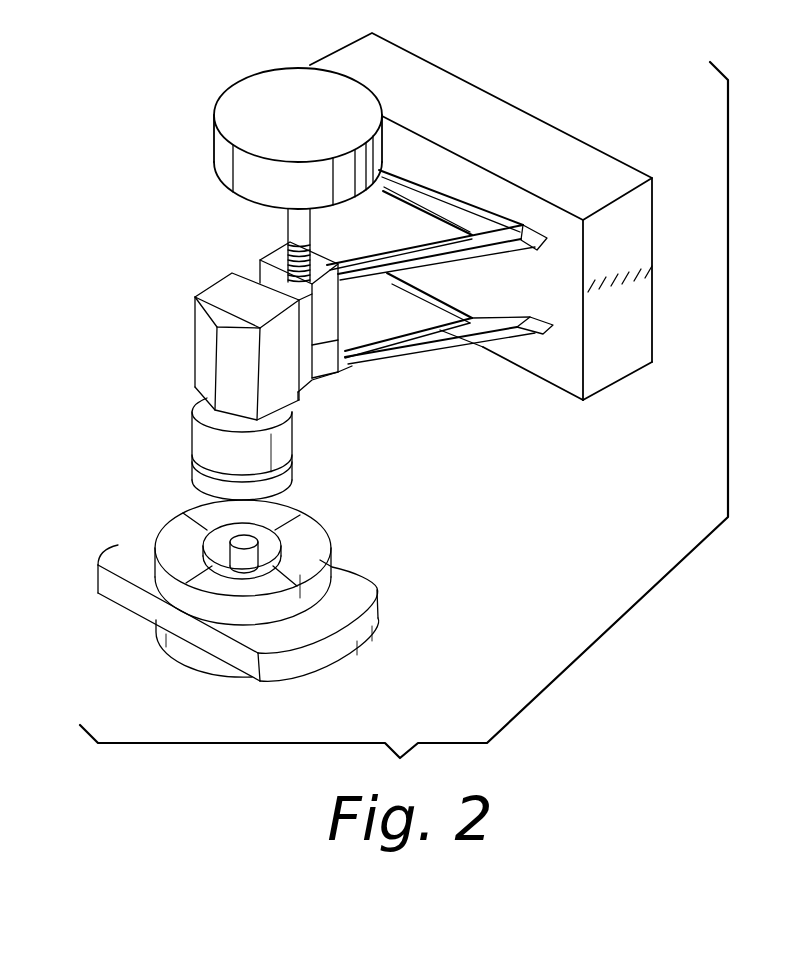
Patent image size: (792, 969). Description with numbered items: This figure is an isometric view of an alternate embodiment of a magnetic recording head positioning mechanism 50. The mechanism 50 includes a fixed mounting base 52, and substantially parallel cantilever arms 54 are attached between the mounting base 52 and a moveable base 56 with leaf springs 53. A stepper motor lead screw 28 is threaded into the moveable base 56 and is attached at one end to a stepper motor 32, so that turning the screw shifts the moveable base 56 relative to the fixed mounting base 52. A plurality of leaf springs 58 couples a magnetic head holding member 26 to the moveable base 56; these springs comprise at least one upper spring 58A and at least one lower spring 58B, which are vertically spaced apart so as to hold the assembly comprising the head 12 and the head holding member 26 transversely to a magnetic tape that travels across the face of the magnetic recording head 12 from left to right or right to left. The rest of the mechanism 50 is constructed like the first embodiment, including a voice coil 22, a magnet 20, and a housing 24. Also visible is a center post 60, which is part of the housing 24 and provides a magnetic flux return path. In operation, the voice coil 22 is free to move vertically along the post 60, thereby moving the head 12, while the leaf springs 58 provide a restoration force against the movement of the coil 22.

The magnetic recording head 12 is at (197, 342).
The magnet 20 is at (188, 540).
The voice coil 22 is at (191, 434).
The housing 24 is at (197, 655).
The magnetic head holding member 26 is at (274, 397).
The stepper motor lead screw 28 is at (287, 222).
The stepper motor 32 is at (262, 70).
The recording head positioning mechanism 50 is at (523, 520).
The fixed mounting base 52 is at (600, 150).
The leaf springs 53 is at (540, 315).
The cantilever arms 54 is at (470, 330).
The moveable base 56 is at (330, 374).
The plurality of leaf springs 58 is at (222, 266).
The upper spring 58A is at (268, 282).
The lower spring 58B is at (327, 372).
The center post 60 is at (262, 557).